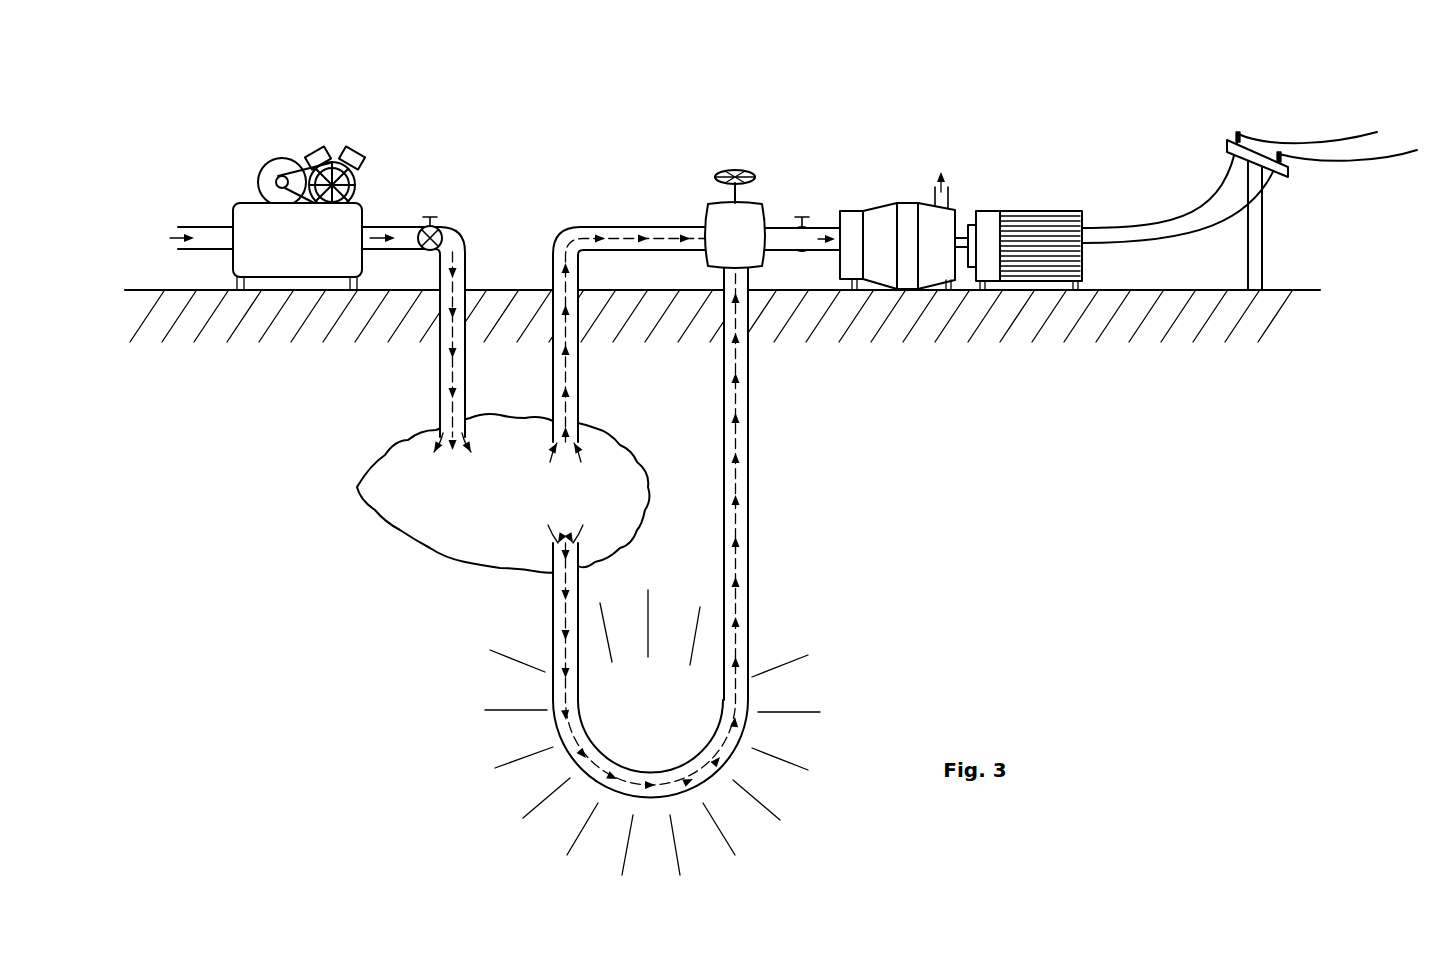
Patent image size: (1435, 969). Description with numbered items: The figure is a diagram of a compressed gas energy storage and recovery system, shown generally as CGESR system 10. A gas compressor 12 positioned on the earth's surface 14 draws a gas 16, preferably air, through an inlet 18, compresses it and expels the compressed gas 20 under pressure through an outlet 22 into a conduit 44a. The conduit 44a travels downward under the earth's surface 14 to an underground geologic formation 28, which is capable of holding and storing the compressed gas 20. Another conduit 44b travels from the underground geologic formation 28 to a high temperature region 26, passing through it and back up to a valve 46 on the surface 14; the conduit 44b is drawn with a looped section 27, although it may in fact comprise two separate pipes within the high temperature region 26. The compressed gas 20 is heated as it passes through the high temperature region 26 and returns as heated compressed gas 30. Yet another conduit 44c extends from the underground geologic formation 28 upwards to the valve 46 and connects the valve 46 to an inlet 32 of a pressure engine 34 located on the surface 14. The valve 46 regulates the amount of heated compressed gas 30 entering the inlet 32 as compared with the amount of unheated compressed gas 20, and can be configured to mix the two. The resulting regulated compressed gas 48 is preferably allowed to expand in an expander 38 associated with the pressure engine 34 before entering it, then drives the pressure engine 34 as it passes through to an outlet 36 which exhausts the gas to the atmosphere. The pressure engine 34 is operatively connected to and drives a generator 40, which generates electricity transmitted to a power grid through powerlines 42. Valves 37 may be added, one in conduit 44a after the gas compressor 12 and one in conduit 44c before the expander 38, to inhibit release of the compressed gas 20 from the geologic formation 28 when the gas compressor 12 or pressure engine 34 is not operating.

The CGESR system 10 is at (968, 146).
The gas compressor 12 is at (279, 249).
The earth's surface 14 is at (615, 290).
The gas 16 is at (172, 242).
The inlet 18 is at (212, 226).
The compressed gas 20 is at (447, 386).
The outlet 22 is at (372, 216).
The high temperature region 26 is at (640, 733).
The looped section 27 is at (590, 784).
The underground geologic formation 28 is at (357, 487).
The heated compressed gas 30 is at (736, 515).
The inlet 32 is at (834, 258).
The pressure engine 34 is at (900, 201).
The outlet 36 is at (930, 192).
The valves 37 is at (440, 216).
The expander 38 is at (850, 225).
The generator 40 is at (1015, 210).
The powerlines 42 is at (1231, 206).
The conduit 44a is at (440, 350).
The conduit 44b is at (553, 597).
The conduit 44c is at (617, 226).
The valve 46 is at (724, 250).
The regulated compressed gas 48 is at (771, 247).